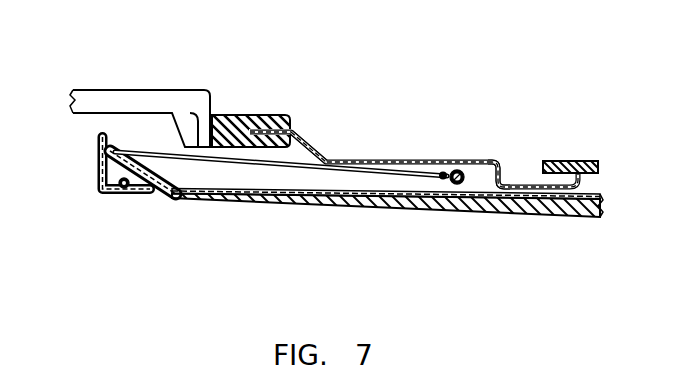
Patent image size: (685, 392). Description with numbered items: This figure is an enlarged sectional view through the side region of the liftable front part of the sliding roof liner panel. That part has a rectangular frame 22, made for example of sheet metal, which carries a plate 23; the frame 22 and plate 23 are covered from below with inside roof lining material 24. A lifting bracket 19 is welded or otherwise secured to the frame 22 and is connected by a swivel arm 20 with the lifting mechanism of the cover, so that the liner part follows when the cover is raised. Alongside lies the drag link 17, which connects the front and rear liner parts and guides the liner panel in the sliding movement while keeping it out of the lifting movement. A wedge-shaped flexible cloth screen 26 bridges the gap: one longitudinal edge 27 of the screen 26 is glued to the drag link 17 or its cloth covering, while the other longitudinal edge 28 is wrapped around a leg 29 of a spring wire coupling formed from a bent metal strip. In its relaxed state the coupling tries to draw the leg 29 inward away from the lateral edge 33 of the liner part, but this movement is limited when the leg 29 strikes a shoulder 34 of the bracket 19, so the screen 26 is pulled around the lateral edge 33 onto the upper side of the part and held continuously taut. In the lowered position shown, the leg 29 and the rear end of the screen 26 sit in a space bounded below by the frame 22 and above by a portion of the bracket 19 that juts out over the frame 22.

The drag link 17 is at (98, 163).
The lifting bracket 19 is at (315, 146).
The swivel arm 20 is at (177, 101).
The rectangular frame 22 is at (310, 191).
The plate 23 is at (577, 161).
The inside roof lining material 24 is at (427, 204).
The screen 26 is at (250, 160).
The longitudinal edge 27 is at (121, 189).
The other longitudinal edge 28 is at (472, 163).
The leg 29 is at (456, 170).
The lateral edge 33 is at (124, 150).
The shoulder 34 is at (503, 181).